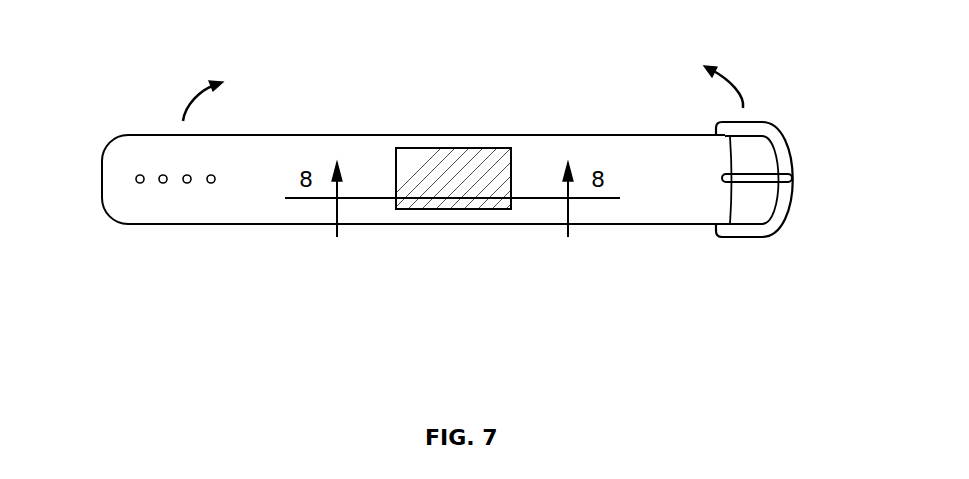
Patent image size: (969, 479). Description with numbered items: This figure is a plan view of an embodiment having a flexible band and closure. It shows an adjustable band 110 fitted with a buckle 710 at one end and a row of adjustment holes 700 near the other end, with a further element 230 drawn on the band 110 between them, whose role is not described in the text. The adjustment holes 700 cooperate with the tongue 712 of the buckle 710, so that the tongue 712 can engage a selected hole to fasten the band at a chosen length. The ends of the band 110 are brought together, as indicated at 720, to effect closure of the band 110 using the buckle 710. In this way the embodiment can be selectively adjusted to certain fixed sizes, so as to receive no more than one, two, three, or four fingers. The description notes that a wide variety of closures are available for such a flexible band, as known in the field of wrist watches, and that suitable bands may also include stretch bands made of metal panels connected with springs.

The adjustable band 110 is at (182, 227).
The adjustment holes 700 is at (135, 178).
The electronic module 230 is at (474, 191).
The buckle 710 is at (747, 238).
The tongue 712 is at (772, 165).
The bringing together of the band ends 720 is at (190, 96).